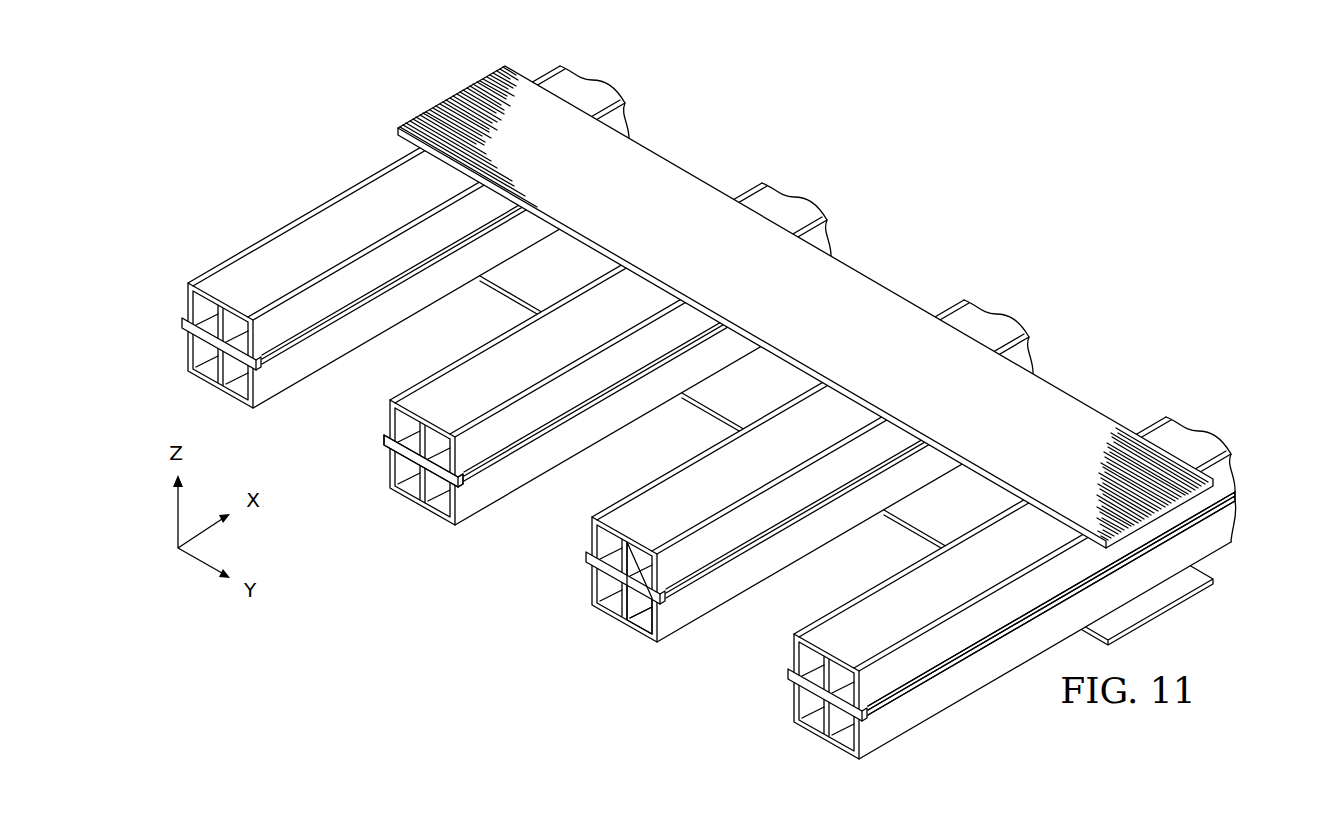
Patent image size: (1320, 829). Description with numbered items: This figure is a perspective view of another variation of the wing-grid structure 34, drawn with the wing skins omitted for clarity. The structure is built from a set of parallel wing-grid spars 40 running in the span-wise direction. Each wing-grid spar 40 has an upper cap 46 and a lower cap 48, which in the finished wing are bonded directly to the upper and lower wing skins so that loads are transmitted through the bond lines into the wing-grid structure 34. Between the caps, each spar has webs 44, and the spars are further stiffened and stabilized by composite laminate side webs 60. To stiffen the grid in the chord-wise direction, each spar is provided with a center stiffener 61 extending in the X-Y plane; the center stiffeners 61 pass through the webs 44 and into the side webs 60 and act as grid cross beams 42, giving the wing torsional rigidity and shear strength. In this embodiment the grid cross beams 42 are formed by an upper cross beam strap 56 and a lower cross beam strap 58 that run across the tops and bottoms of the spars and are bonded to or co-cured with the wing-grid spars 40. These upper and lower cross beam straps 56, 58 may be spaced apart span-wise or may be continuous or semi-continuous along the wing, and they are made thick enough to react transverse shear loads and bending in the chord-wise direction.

The wing-grid structure 34 is at (1005, 202).
The wing-grid spar 40 is at (421, 505).
The grid cross beam 42 is at (390, 440).
The web 44 is at (640, 608).
The upper cap 46 is at (252, 262).
The lower cap 48 is at (811, 713).
The upper cross beam strap 56 is at (863, 283).
The lower cross beam strap 58 is at (1152, 600).
The side web 60 is at (591, 583).
The center stiffener 61 is at (1217, 520).